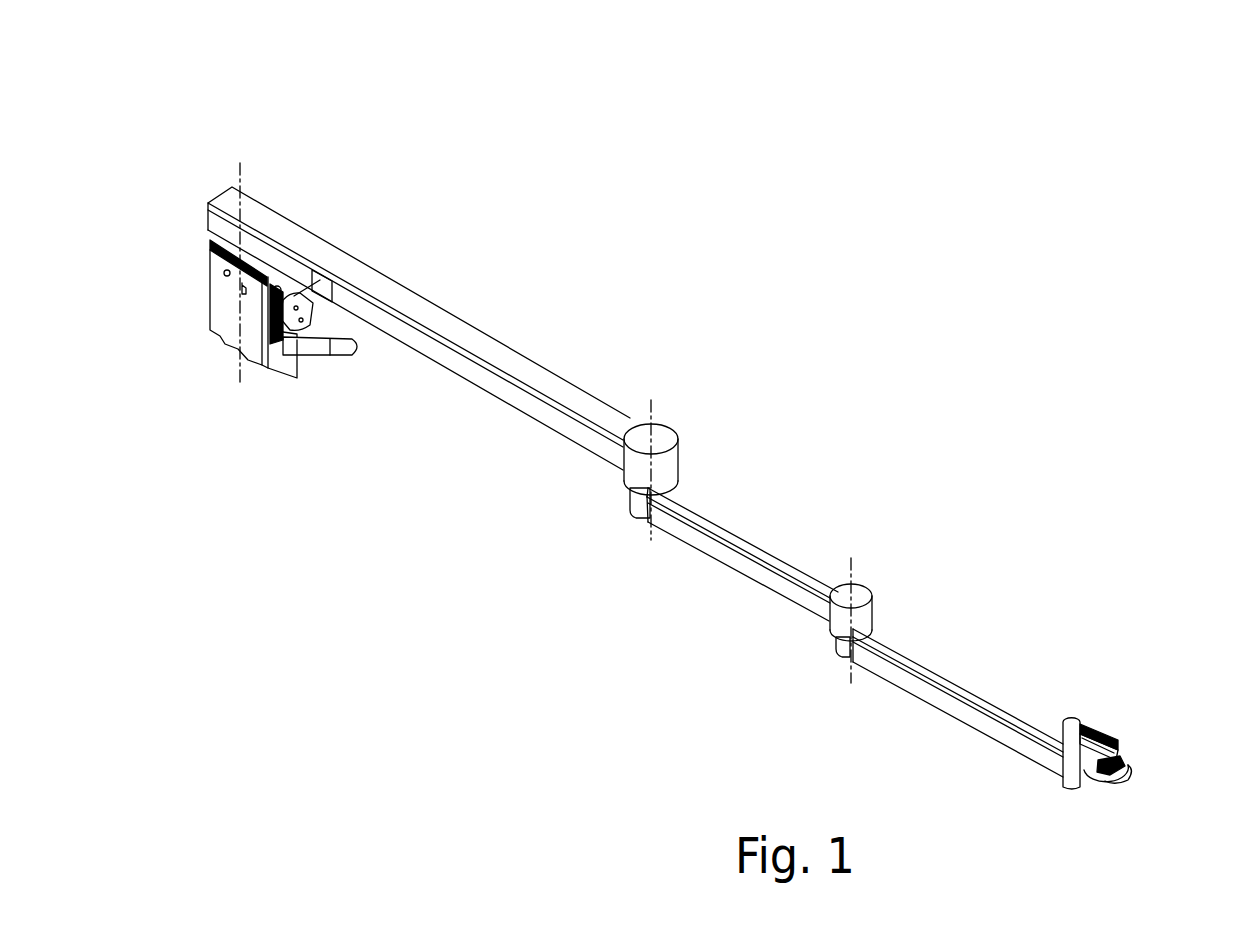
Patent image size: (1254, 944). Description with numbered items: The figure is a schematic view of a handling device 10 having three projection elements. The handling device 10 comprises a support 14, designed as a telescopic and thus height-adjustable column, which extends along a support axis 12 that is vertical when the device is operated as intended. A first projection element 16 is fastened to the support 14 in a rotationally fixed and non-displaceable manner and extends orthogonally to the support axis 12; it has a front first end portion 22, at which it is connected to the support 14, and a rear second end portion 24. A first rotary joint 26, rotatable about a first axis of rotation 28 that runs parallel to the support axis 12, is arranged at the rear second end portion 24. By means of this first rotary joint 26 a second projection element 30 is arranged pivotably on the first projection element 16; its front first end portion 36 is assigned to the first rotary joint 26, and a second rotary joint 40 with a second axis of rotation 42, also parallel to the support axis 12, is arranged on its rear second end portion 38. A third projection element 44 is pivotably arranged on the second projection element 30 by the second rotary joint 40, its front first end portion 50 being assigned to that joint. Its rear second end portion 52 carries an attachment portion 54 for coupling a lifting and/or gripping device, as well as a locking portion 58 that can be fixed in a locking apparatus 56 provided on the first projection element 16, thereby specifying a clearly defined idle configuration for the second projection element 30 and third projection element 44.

The handling device 10 is at (143, 88).
The support axis 12 is at (238, 377).
The support 14 is at (226, 307).
The first projection element 16 is at (467, 330).
The front first end portion 22 is at (258, 213).
The rear second end portion 24 is at (626, 423).
The first rotary joint 26 is at (658, 434).
The first axis of rotation 28 is at (650, 537).
The second projection element 30 is at (757, 540).
The front first end portion 36 is at (673, 497).
The rear second end portion 38 is at (822, 580).
The second rotary joint 40 is at (867, 587).
The second axis of rotation 42 is at (850, 678).
The third projection element 44 is at (980, 710).
The front first end portion 50 is at (880, 638).
The rear second end portion 52 is at (1055, 740).
The attachment portion 54 is at (1088, 783).
The locking apparatus 56 is at (308, 343).
The locking portion 58 is at (1113, 777).